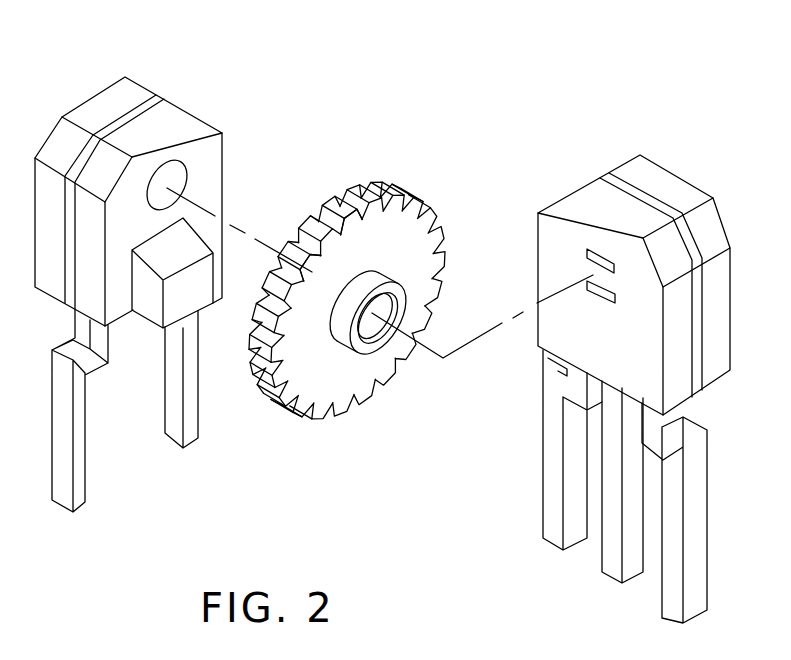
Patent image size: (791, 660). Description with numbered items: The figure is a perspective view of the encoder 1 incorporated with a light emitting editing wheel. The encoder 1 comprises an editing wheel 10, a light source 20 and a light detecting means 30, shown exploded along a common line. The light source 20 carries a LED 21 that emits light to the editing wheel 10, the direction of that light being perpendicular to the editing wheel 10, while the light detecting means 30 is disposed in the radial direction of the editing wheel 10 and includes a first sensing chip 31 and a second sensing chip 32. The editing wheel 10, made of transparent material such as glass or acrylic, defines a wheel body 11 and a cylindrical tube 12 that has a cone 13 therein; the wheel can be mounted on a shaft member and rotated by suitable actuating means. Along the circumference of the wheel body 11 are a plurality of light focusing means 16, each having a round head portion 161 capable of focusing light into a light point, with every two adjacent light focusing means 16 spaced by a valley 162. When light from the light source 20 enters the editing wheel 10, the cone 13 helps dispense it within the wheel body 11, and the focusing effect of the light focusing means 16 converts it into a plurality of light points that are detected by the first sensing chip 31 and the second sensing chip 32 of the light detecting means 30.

The encoder 1 is at (410, 410).
The editing wheel 10 is at (417, 180).
The wheel body 11 is at (333, 367).
The cylindrical tube 12 is at (408, 337).
The cone 13 is at (379, 330).
The light focusing means 16 is at (370, 183).
The round head portion 161 is at (292, 240).
The valley 162 is at (337, 187).
The light source 20 is at (163, 118).
The LED 21 is at (167, 175).
The light detecting means 30 is at (680, 178).
The first sensing chip 31 is at (603, 253).
The second sensing chip 32 is at (600, 290).